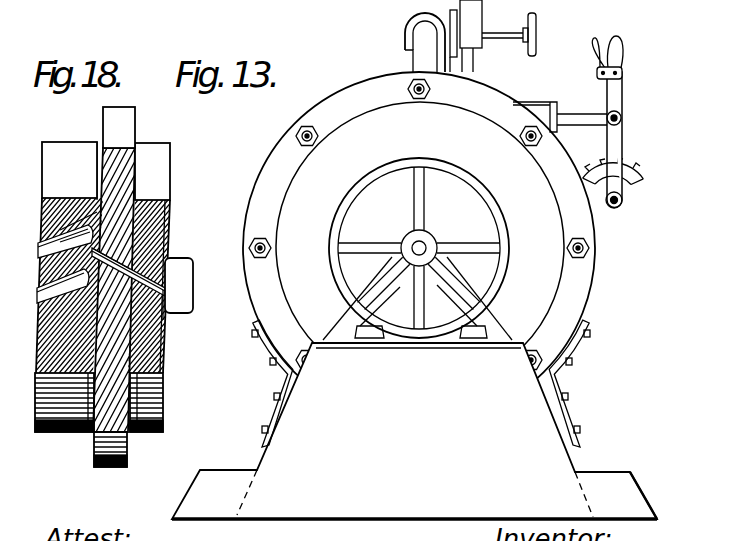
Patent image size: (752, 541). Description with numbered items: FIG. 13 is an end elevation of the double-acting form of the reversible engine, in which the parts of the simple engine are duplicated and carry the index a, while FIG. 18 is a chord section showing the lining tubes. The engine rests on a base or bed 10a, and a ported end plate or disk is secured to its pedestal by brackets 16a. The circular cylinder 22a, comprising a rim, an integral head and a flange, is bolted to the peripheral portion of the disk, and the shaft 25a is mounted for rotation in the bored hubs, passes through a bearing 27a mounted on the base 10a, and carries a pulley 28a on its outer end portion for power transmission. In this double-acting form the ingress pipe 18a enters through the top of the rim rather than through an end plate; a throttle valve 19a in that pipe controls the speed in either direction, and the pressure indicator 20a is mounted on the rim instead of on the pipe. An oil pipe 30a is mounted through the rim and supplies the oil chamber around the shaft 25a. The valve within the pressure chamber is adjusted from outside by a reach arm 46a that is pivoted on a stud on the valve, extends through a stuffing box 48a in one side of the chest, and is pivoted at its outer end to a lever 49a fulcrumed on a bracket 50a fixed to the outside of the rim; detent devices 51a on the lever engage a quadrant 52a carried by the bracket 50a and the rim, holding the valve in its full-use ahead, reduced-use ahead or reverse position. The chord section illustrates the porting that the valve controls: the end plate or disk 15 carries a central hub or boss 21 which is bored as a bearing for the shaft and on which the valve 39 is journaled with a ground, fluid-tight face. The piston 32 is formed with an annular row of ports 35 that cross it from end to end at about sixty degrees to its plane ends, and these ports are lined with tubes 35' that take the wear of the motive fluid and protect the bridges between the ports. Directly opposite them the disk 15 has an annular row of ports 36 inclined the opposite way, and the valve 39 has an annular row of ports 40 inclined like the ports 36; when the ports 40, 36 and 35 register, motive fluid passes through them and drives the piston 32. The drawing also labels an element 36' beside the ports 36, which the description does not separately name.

In FIG. 18, the end plate or disk 15 is at (119, 127).
In FIG. 18, the piston 32 is at (69, 170).
In FIG. 18, the valve 39 is at (152, 171).
In FIG. 18, the ports 35 is at (142, 200).
In FIG. 18, the lining tubes 35' is at (141, 223).
In FIG. 18, the ports 36 is at (151, 244).
In FIG. 18, the diagonal channel 36' is at (171, 256).
In FIG. 18, the ports 40 is at (165, 290).
In FIG. 18, the hub or boss 21 is at (179, 285).
In FIG. 13, the base or bed 10a is at (414, 431).
In FIG. 13, the brackets 16a is at (283, 372).
In FIG. 13, the ingress pipe 18a is at (423, 55).
In FIG. 13, the throttle valve 19a is at (517, 36).
In FIG. 13, the pressure indicator 20a is at (470, 23).
In FIG. 13, the cylinder 22a is at (419, 248).
In FIG. 13, the shaft 25a is at (413, 246).
In FIG. 13, the bearing 27a is at (380, 271).
In FIG. 13, the pulley 28a is at (343, 209).
In FIG. 13, the oil pipe 30a is at (447, 72).
In FIG. 13, the reach arm 46a is at (578, 118).
In FIG. 13, the stuffing box 48a is at (539, 103).
In FIG. 13, the lever 49a is at (622, 85).
In FIG. 13, the bracket 50a is at (622, 206).
In FIG. 13, the detent devices 51a is at (597, 68).
In FIG. 13, the quadrant 52a is at (643, 173).